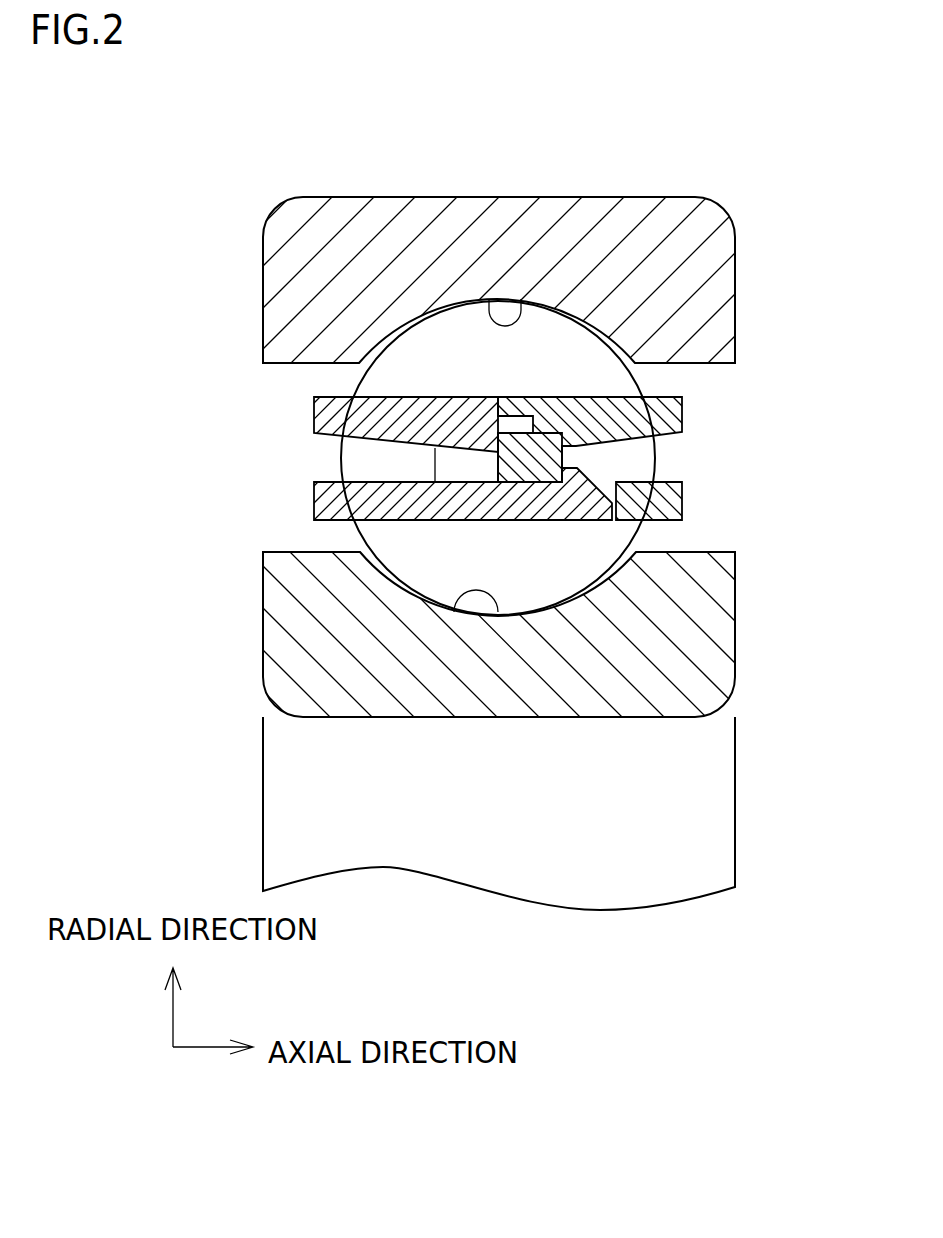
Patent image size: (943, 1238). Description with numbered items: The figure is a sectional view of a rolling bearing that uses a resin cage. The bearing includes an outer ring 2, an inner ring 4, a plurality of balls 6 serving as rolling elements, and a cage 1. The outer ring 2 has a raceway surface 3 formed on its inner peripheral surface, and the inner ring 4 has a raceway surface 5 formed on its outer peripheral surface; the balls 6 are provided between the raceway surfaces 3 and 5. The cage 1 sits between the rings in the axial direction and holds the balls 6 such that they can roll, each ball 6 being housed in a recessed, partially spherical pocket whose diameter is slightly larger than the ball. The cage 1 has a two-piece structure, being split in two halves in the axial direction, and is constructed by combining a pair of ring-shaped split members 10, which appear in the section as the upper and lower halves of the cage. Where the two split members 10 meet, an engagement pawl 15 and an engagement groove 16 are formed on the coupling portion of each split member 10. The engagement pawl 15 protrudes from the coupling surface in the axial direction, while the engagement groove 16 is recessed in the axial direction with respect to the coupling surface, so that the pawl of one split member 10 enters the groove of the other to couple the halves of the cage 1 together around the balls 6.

The cage 1 is at (688, 414).
The outer ring 2 is at (715, 291).
The raceway surface 3 is at (527, 307).
The inner ring 4 is at (717, 618).
The raceway surface 5 is at (458, 598).
The ball 6 is at (547, 580).
The split member 10 is at (314, 410).
The engagement pawl 15 is at (573, 521).
The engagement groove 16 is at (520, 484).